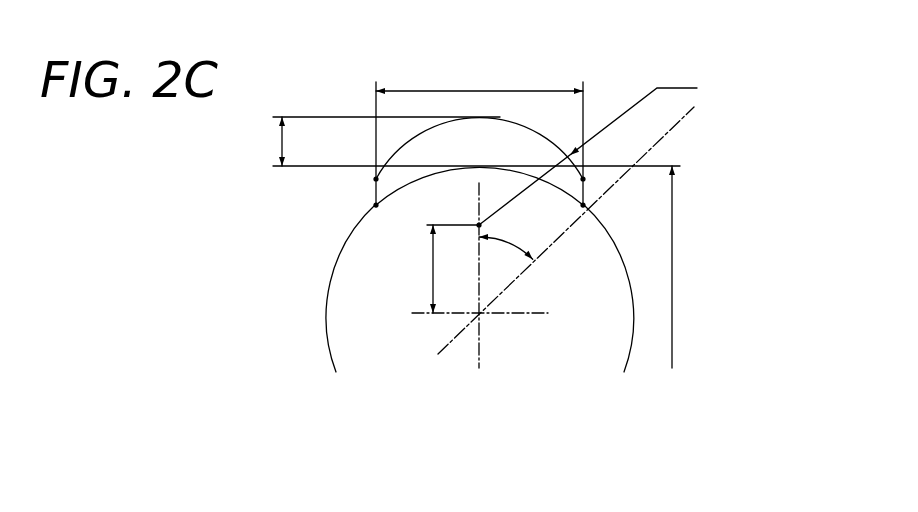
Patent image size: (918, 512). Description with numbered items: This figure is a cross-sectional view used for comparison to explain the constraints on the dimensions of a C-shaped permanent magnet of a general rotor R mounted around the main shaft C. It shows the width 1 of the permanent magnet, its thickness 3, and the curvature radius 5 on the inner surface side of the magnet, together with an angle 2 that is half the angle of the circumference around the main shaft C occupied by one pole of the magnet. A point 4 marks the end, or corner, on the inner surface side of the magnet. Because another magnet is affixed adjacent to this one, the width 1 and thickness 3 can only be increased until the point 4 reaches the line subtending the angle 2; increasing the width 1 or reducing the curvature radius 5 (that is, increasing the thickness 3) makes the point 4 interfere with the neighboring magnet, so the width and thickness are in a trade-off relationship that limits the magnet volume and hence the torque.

The width 1 is at (479, 132).
The angle 2 is at (480, 261).
The thickness 3 is at (467, 141).
The point 4 is at (587, 207).
The curvature radius 5 is at (681, 267).
The rotor R is at (727, 120).
The main shaft C is at (481, 315).